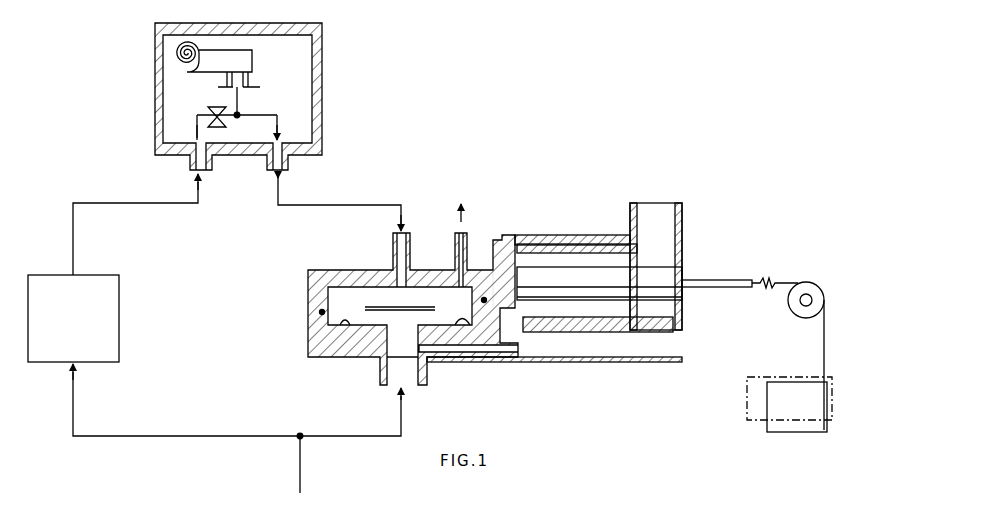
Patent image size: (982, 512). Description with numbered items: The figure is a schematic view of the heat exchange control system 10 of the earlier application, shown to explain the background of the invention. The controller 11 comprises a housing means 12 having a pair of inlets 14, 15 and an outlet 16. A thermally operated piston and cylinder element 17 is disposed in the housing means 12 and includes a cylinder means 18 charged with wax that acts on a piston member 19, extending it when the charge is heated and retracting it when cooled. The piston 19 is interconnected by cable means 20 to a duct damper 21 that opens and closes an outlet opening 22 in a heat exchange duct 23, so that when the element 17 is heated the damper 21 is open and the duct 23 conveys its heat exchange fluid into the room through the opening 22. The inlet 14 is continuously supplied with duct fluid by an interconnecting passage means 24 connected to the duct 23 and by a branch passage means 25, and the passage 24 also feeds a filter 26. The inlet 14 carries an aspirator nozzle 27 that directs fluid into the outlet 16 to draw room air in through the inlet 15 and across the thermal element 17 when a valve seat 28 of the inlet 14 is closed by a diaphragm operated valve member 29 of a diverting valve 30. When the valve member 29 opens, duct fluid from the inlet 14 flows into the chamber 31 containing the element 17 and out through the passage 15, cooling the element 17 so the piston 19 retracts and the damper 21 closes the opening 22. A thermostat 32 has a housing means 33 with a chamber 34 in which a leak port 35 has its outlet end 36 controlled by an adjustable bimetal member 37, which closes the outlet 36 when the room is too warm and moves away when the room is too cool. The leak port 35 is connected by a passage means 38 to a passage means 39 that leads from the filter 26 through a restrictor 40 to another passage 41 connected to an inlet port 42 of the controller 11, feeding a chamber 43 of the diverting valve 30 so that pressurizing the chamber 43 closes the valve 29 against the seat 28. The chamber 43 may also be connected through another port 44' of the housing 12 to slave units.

The control system 10 is at (623, 106).
The controller 11 is at (585, 214).
The housing means 12 is at (506, 240).
The inlet 14 is at (383, 384).
The inlet 15 is at (658, 212).
The outlet 16 is at (663, 351).
The piston and cylinder element 17 is at (655, 258).
The cylinder means 18 is at (627, 275).
The piston member 19 is at (728, 281).
The cable means 20 is at (787, 280).
The duct damper 21 is at (806, 432).
The outlet opening 22 is at (770, 398).
The heat exchange duct 23 is at (750, 386).
The interconnecting passage means 24 is at (298, 462).
The branch passage means 25 is at (398, 436).
The filter 26 is at (120, 324).
The aspirator nozzle 27 is at (492, 356).
The valve seat 28 is at (368, 338).
The diaphragm operated valve member 29 is at (413, 300).
The diverting valve 30 is at (356, 296).
The chamber 31 is at (540, 253).
The thermostat 32 is at (340, 74).
The housing means 33 is at (152, 118).
The chamber 34 is at (182, 86).
The leak port 35 is at (250, 73).
The outlet end 36 is at (245, 67).
The adjustable bimetal member 37 is at (215, 66).
The passage means 38 is at (237, 97).
The passage means 39 is at (120, 200).
The restrictor 40 is at (232, 130).
The passage 41 is at (340, 206).
The inlet port 42 is at (393, 244).
The chamber 43 is at (385, 292).
The port 44' is at (485, 210).